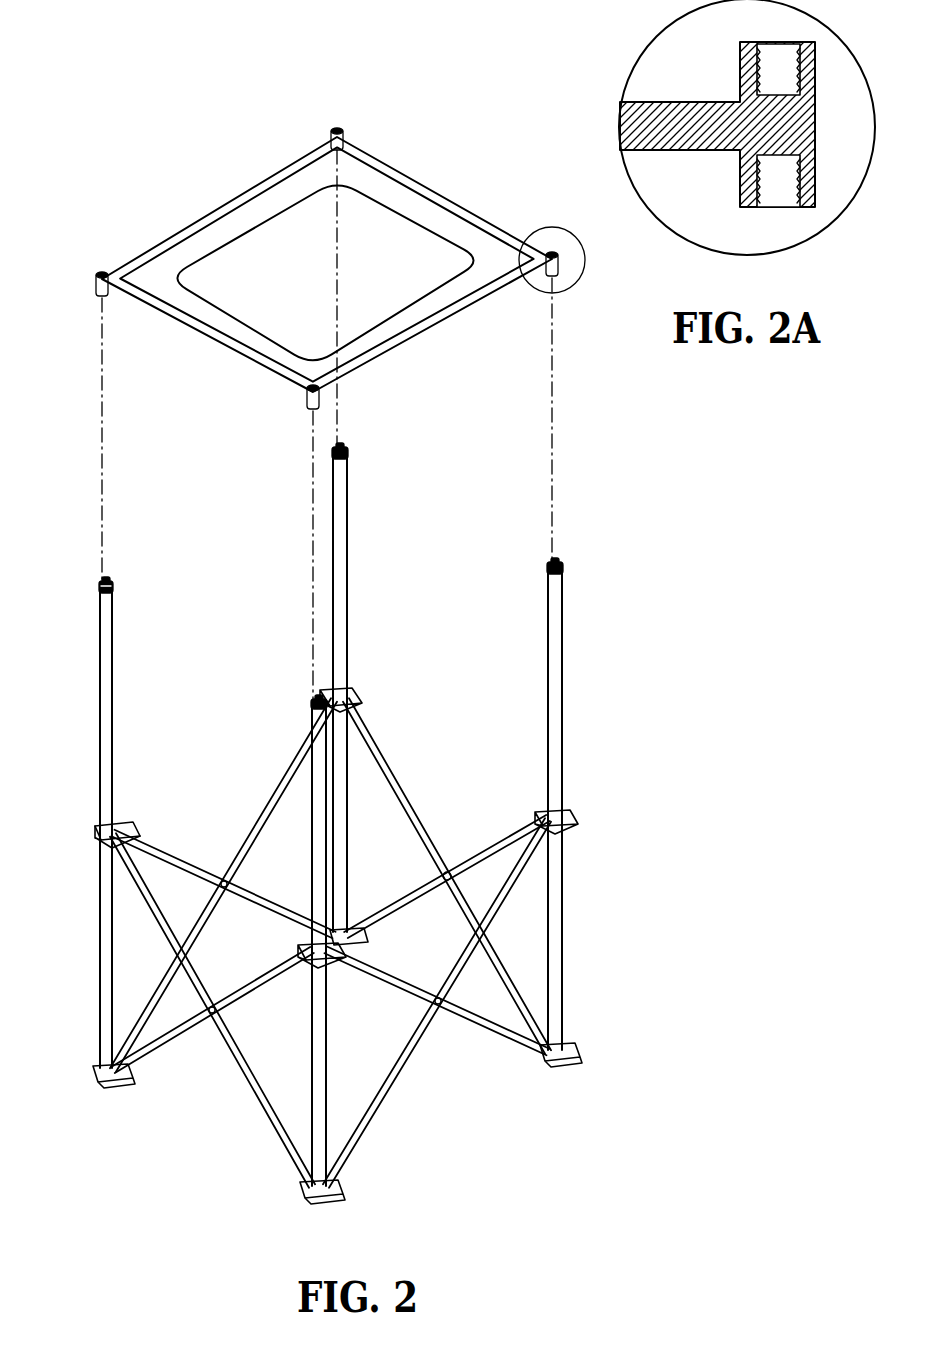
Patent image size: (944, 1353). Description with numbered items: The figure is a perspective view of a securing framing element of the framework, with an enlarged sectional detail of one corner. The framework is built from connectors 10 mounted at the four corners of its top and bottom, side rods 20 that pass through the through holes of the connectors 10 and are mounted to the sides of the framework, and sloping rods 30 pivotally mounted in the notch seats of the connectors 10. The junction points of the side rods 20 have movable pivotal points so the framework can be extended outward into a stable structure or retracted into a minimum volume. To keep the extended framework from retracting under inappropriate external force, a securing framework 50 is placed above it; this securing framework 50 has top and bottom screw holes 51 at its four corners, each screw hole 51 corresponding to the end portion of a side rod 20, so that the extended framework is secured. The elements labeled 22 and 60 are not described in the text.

The connector 10 is at (120, 825).
The side rod 20 is at (108, 712).
The pivot joint of cross braces 22 is at (451, 866).
The sloping rod 30 is at (400, 774).
The securing framework 50 is at (443, 212).
The screw hole 51 is at (102, 272).
The leg top connector 60 is at (113, 590).